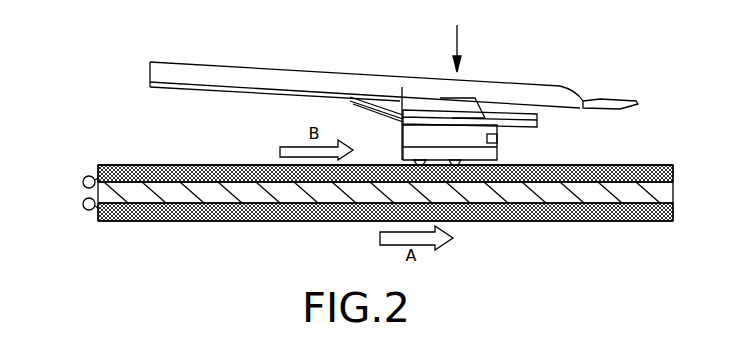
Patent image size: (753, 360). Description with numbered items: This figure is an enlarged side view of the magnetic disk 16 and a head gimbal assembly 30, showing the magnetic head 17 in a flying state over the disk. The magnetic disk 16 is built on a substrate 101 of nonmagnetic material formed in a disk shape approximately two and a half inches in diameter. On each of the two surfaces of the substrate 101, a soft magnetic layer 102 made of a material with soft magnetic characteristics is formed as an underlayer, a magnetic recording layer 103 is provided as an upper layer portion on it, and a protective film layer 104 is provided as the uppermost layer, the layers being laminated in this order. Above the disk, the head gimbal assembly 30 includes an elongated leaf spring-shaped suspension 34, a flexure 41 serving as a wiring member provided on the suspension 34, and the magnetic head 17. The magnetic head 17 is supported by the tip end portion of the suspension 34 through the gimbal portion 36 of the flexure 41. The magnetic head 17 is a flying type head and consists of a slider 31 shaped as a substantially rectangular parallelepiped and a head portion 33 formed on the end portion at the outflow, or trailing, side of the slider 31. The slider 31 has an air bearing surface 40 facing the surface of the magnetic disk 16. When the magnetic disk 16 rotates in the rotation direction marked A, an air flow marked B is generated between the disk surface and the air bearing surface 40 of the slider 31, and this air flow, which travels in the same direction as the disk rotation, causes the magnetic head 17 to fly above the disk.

The magnetic disk 16 is at (131, 134).
The magnetic head 17 is at (358, 196).
The head gimbal assembly 30 is at (394, 76).
The slider 31 is at (477, 110).
The head portion 33 is at (497, 139).
The suspension 34 is at (229, 72).
The gimbal portion 36 is at (403, 98).
The air bearing surface 40 is at (406, 163).
The flexure 41 is at (215, 95).
The substrate 101 is at (195, 220).
The soft magnetic layer 102 is at (83, 182).
The magnetic recording layer 103 is at (167, 172).
The protective film layer 104 is at (108, 165).